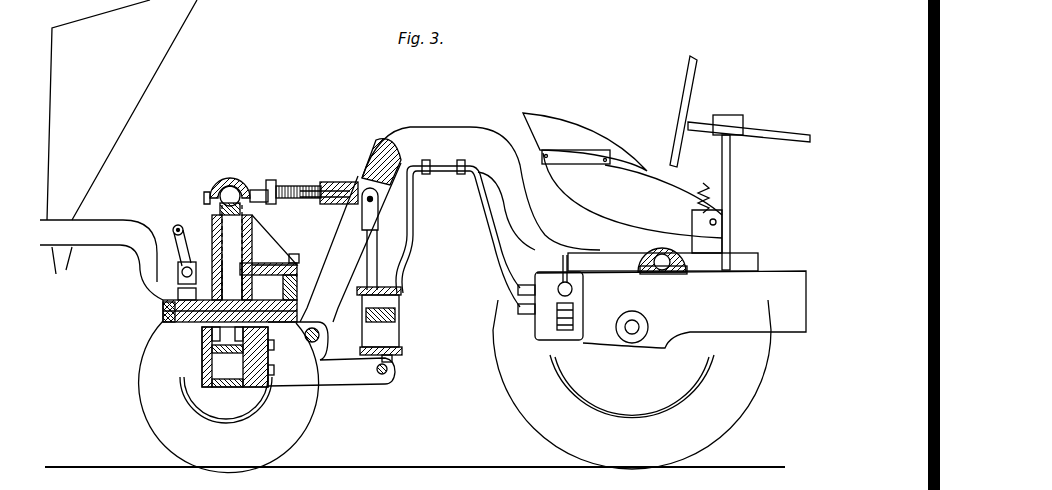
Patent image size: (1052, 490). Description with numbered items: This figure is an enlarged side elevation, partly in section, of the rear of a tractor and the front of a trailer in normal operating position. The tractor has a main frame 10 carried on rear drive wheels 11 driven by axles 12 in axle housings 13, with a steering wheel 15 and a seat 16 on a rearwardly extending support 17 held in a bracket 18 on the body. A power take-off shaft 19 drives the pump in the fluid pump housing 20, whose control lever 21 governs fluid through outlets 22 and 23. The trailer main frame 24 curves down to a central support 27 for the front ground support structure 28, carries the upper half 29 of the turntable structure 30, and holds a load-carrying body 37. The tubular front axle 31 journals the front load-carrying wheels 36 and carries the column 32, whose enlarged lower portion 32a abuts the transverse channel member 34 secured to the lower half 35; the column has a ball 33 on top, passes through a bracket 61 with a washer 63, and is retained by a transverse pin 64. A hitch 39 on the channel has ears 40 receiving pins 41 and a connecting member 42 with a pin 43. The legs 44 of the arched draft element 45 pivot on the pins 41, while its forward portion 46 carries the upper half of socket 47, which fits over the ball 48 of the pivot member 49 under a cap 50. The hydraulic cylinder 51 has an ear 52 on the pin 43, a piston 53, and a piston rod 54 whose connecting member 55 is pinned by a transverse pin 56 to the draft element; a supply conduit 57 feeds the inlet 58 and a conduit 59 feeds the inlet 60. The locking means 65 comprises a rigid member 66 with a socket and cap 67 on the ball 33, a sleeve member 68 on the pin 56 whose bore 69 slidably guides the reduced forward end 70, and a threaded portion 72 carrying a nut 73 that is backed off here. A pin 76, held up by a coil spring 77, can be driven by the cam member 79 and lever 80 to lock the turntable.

The main frame 10 is at (780, 330).
The rear drive wheels 11 is at (745, 383).
The axles 12 is at (634, 334).
The axle housings 13 is at (647, 318).
The steering wheel 15 is at (697, 62).
The seat 16 is at (545, 130).
The support 17 is at (567, 190).
The bracket 18 is at (724, 212).
The power take-off shaft 19 is at (573, 330).
The fluid pump housing 20 is at (538, 330).
The control lever 21 is at (560, 260).
The outlet 22 is at (528, 295).
The outlet 23 is at (530, 314).
The main frame 24 is at (62, 262).
The central support 27 is at (157, 255).
The front ground support structure 28 is at (213, 392).
The upper half 29 is at (291, 283).
The turntable structure 30 is at (156, 312).
The front axle 31 is at (203, 373).
The column 32 is at (250, 218).
The enlarged lower portion 32a is at (222, 337).
The ball 33 is at (233, 185).
The transverse channel member 34 is at (207, 352).
The lower half 35 is at (320, 336).
The load-carrying wheels 36 is at (313, 397).
The load-carrying body 37 is at (87, 166).
The hitch 39 is at (370, 378).
The ears 40 is at (285, 386).
The pins 41 is at (300, 360).
The connecting member 42 is at (392, 382).
The pin 43 is at (388, 371).
The legs 44 is at (364, 188).
The draft element 45 is at (442, 130).
The forward portion 46 is at (620, 258).
The upper half of socket 47 is at (657, 233).
The ball 48 is at (718, 226).
The pivot member 49 is at (690, 265).
The cap 50 is at (668, 252).
The hydraulic cylinder 51 is at (400, 290).
The ear 52 is at (402, 350).
The piston 53 is at (398, 308).
The piston rod 54 is at (379, 236).
The connecting member 55 is at (379, 212).
The transverse pin 56 is at (374, 199).
The supply conduit 57 is at (493, 247).
The inlet 58 is at (395, 280).
The conduit 59 is at (505, 305).
The inlet 60 is at (394, 357).
The bracket 61 is at (256, 240).
The washer 63 is at (189, 231).
The transverse pin 64 is at (220, 208).
The locking means 65 is at (355, 175).
The rigid member 66 is at (224, 180).
The cap 67 is at (212, 200).
The sleeve member 68 is at (372, 170).
The bore 69 is at (354, 190).
The reduced forward end 70 is at (338, 204).
The threaded portion 72 is at (306, 184).
The nut 73 is at (270, 181).
The pin 76 is at (158, 316).
The coil spring 77 is at (195, 298).
The cam member 79 is at (182, 272).
The lever 80 is at (174, 231).